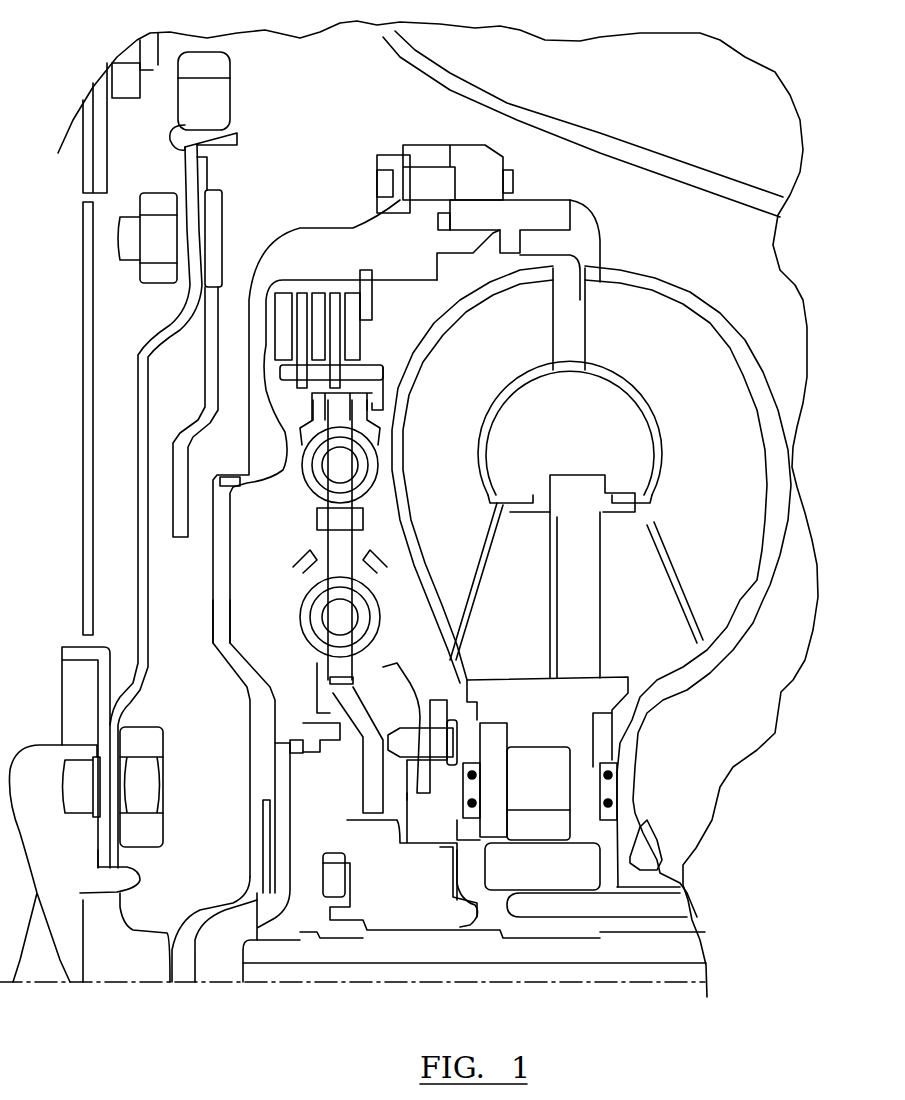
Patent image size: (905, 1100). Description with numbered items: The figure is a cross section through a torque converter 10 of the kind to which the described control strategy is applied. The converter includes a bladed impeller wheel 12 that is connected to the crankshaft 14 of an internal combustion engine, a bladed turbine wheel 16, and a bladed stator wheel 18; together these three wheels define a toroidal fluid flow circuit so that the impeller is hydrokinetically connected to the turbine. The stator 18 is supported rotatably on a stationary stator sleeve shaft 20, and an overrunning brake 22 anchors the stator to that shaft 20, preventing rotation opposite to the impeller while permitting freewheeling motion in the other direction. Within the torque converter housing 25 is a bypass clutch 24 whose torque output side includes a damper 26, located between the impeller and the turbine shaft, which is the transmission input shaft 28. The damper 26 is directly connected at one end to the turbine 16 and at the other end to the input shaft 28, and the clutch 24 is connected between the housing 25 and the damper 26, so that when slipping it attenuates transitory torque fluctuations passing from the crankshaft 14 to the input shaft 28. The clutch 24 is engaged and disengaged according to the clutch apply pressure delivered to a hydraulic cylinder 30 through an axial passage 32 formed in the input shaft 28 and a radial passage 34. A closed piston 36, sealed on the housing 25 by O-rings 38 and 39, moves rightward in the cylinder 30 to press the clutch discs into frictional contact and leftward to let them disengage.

The torque converter 10 is at (770, 301).
The bladed impeller wheel 12 is at (725, 444).
The crankshaft 14 is at (72, 967).
The bladed turbine wheel 16 is at (455, 497).
The bladed stator wheel 18 is at (625, 600).
The stator sleeve shaft 20 is at (677, 907).
The overrunning brake 22 is at (553, 783).
The bypass clutch 24 is at (327, 322).
The torque converter housing 25 is at (316, 243).
The damper 26 is at (318, 548).
The transmission input shaft 28 is at (417, 948).
The hydraulic cylinder 30 is at (240, 667).
The axial passage 32 is at (293, 973).
The radial passage 34 is at (278, 822).
The closed piston 36 is at (273, 680).
The O-ring 38 is at (300, 750).
The O-ring 39 is at (232, 486).